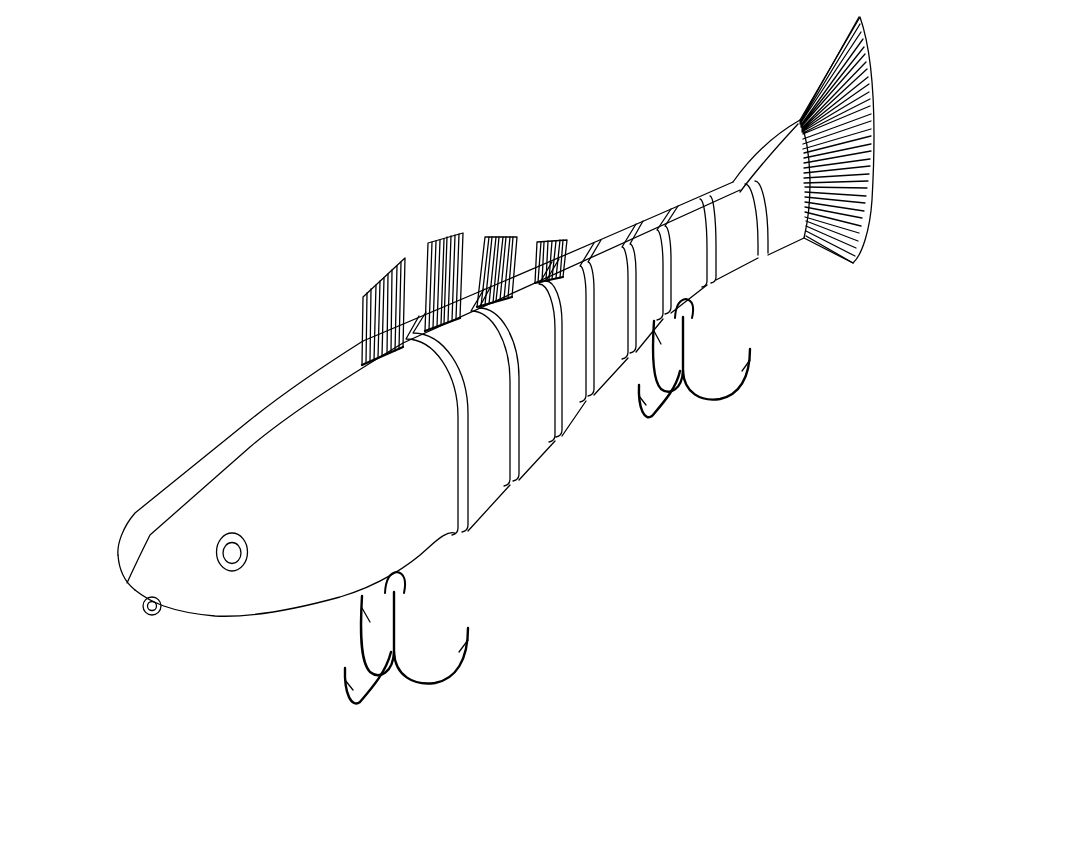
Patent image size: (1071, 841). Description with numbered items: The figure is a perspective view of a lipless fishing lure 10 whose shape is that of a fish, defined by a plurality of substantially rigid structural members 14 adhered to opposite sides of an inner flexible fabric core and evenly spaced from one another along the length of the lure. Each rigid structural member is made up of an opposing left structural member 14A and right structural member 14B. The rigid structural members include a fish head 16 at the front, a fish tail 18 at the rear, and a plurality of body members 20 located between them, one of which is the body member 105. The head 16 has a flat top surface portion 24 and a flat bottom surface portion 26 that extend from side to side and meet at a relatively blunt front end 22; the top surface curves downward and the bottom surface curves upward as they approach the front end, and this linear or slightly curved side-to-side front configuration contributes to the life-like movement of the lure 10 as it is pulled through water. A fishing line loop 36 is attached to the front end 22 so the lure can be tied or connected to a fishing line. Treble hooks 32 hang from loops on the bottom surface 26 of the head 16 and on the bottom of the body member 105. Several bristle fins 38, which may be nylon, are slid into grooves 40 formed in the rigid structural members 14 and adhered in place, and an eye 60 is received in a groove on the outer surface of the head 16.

The fishing lure 10 is at (561, 128).
The rigid structural members 14 is at (481, 489).
The left structural member 14A is at (232, 443).
The right structural member 14B is at (247, 597).
The fish head 16 is at (300, 560).
The fish tail 18 is at (783, 205).
The body members 20 is at (523, 358).
The front end 22 is at (120, 570).
The top surface portion 24 is at (298, 392).
The bottom surface portion 26 is at (427, 560).
The hooks 32 is at (377, 703).
The fishing line loop 36 is at (149, 615).
The bristle fins 38 is at (450, 240).
The grooves 40 is at (360, 367).
The eye 60 is at (247, 540).
The body member 105 is at (690, 273).